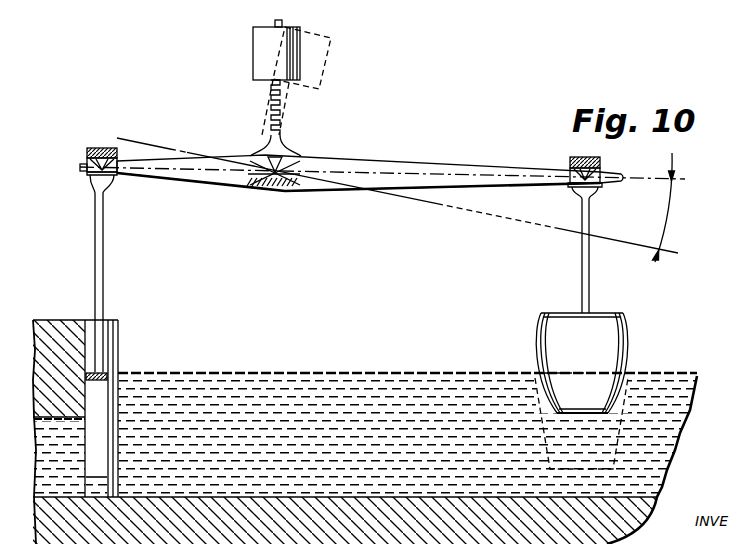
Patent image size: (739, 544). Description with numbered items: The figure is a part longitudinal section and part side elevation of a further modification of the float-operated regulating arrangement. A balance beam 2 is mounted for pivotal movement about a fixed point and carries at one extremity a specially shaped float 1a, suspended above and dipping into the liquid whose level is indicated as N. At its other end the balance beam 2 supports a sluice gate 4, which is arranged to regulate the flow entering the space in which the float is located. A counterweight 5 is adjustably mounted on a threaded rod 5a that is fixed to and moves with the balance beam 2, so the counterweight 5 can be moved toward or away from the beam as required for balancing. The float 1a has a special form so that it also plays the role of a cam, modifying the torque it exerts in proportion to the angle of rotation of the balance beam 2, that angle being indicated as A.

The balance beam 2 is at (382, 162).
The sluice gate 4 is at (99, 396).
The counterweight 5 is at (305, 37).
The threaded rod 5a is at (278, 113).
The float 1a is at (553, 341).
The water level N is at (429, 374).
The angle of tilt A is at (400, 200).